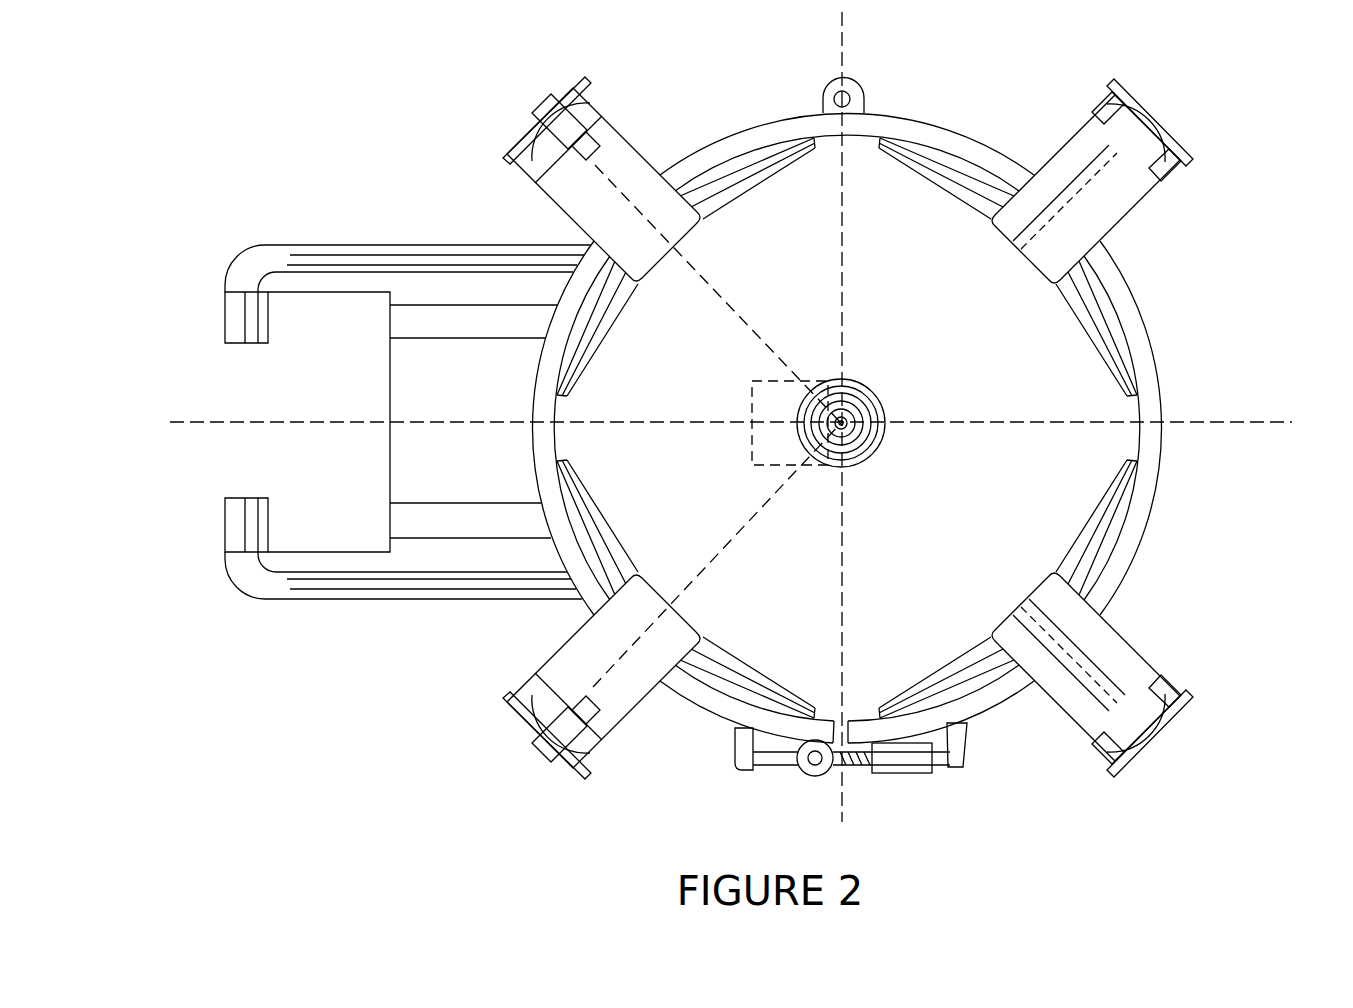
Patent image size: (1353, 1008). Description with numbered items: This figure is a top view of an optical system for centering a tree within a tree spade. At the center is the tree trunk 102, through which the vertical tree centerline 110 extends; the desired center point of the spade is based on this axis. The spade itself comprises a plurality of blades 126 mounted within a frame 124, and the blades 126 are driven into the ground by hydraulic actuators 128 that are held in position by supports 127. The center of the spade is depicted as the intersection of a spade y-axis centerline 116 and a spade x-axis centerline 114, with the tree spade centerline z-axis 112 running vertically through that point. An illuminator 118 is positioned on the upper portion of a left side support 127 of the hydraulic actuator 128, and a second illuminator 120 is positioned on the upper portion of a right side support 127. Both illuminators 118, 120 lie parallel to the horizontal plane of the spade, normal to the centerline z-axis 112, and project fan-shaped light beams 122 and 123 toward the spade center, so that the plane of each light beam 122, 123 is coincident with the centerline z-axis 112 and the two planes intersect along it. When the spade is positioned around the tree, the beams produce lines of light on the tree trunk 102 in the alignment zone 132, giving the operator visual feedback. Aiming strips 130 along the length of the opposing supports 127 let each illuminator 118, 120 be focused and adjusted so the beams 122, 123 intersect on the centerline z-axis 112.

The tree trunk 102 is at (883, 421).
The tree centerline 110 is at (845, 424).
The tree spade centerline z-axis 112 is at (843, 421).
The spade x-axis centerline 114 is at (1183, 422).
The spade y-axis centerline 116 is at (842, 30).
The illuminator 118 is at (533, 113).
The second illuminator 120 is at (532, 740).
The light beam 122 is at (738, 328).
The light beam 123 is at (754, 522).
The frame 124 is at (1153, 450).
The blades 126 is at (1007, 770).
The support 127 is at (1133, 647).
The hydraulic actuator 128 is at (1165, 132).
The aiming strip 130 is at (1102, 187).
The alignment zone 132 is at (752, 417).